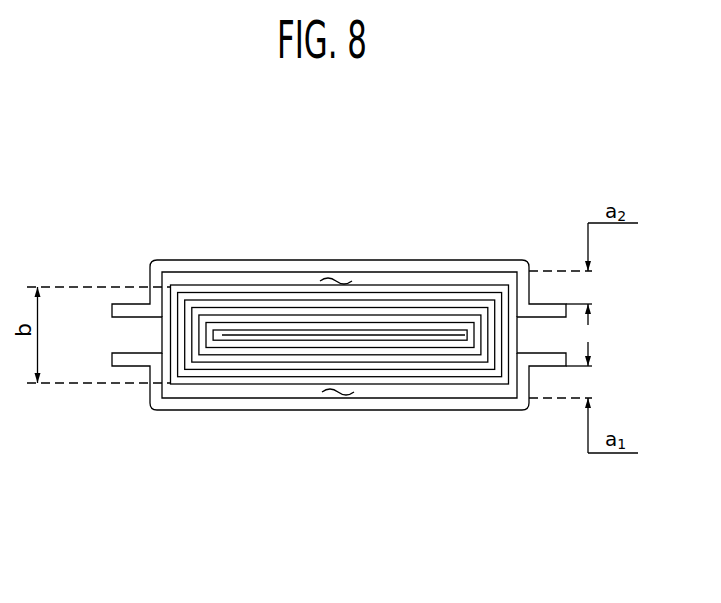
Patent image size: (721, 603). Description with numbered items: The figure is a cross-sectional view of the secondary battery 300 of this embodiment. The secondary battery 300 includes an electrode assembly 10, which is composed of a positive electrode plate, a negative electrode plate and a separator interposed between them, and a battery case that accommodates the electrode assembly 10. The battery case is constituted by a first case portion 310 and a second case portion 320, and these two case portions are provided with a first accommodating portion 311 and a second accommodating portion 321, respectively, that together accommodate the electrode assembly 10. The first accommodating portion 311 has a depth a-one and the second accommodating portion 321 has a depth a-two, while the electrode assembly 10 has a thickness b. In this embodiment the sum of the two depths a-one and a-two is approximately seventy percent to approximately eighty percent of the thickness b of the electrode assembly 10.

The secondary battery 300 is at (550, 167).
The second case portion 320 is at (128, 265).
The first case portion 310 is at (132, 407).
The second accommodating portion 321 is at (332, 283).
The first accommodating portion 311 is at (335, 390).
The electrode assembly 10 is at (165, 340).